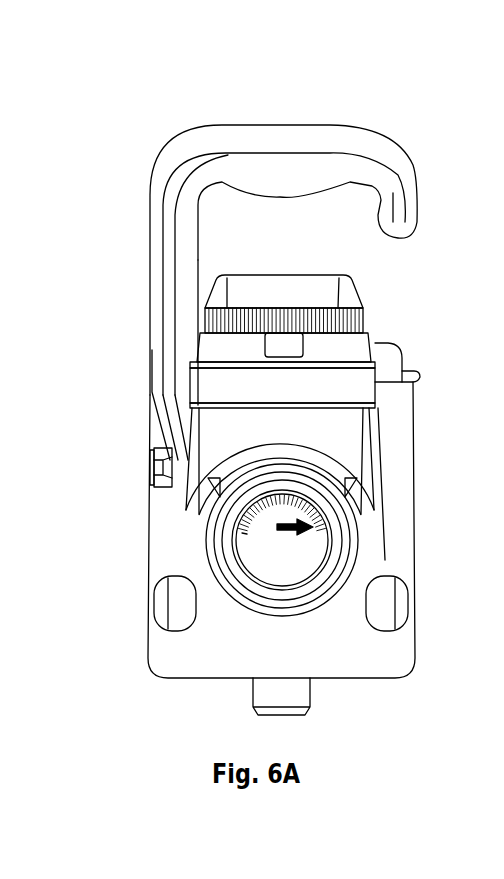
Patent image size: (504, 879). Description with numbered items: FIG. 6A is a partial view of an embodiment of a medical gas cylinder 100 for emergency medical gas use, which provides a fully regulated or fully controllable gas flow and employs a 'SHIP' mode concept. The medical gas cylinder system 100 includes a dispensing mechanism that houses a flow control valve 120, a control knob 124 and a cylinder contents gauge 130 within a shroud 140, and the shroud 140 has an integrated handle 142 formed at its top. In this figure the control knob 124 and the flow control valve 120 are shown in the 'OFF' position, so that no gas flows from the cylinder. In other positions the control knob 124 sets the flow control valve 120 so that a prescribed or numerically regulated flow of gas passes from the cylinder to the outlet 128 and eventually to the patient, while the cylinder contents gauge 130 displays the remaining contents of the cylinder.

The medical gas cylinder 100 is at (106, 102).
The integrated handle 142 is at (268, 135).
The flow control valve 120 is at (381, 316).
The control knob 124 is at (356, 283).
The outlet 128 is at (158, 448).
The cylinder contents gauge 130 is at (298, 552).
The shroud 140 is at (213, 680).